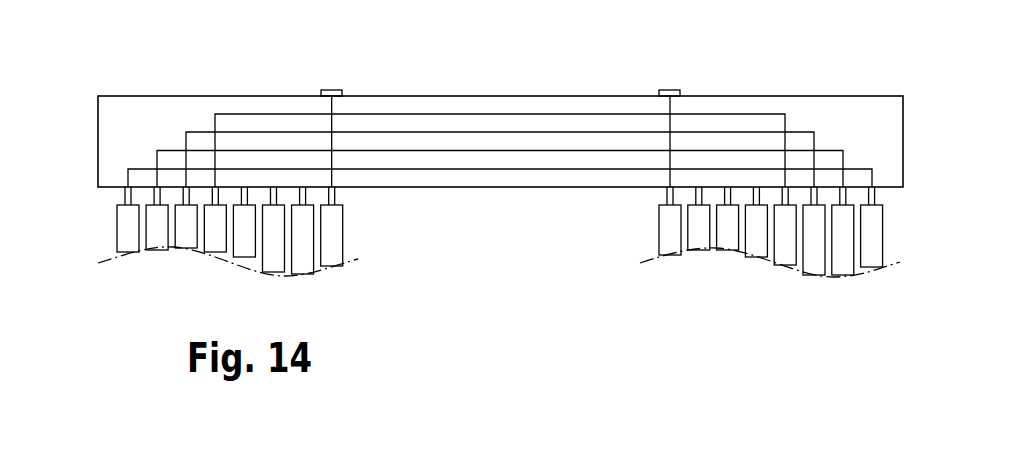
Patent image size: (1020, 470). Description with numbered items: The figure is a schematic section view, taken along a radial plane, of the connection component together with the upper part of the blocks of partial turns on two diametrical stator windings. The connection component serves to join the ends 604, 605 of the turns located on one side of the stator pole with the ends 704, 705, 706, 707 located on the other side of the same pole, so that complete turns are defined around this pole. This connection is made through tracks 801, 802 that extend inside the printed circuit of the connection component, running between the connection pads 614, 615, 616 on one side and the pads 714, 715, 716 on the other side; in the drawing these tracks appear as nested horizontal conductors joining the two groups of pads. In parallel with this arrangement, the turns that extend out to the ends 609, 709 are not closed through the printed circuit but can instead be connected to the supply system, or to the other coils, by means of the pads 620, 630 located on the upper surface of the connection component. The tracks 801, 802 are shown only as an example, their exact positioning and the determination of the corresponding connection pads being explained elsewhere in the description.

The end of turn 604 is at (128, 232).
The end of turn 605 is at (157, 238).
The end of turn 609 is at (330, 240).
The connection pad 614 is at (125, 192).
The connection pad 615 is at (152, 193).
The connection pad 616 is at (183, 195).
The pad 620 is at (331, 90).
The pad 630 is at (668, 90).
The end of turn 704 is at (872, 255).
The end of turn 705 is at (842, 262).
The end of turn 706 is at (783, 255).
The end of turn 707 is at (812, 260).
The end of turn 709 is at (668, 232).
The pad 714 is at (873, 193).
The pad 715 is at (847, 197).
The pad 716 is at (815, 197).
The track 801 is at (481, 169).
The track 802 is at (567, 150).